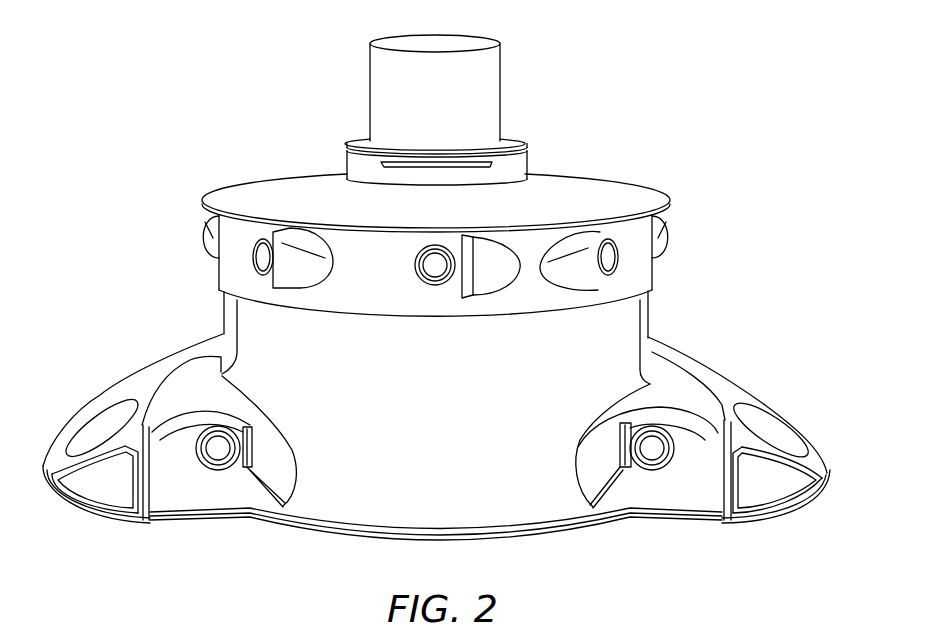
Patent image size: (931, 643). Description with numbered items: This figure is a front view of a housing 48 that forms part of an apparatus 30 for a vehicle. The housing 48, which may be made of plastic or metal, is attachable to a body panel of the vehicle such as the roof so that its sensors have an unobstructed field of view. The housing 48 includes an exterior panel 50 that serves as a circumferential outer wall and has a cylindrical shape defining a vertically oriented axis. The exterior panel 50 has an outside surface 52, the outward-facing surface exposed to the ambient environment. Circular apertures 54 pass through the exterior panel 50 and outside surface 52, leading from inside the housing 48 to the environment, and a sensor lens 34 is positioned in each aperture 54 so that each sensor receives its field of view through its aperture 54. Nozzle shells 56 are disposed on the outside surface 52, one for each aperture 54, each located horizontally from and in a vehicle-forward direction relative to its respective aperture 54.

The apparatus 30 is at (166, 116).
The sensor lens 34 is at (423, 247).
The housing 48 is at (628, 180).
The exterior panel 50 is at (427, 317).
The outside surface 52 is at (633, 263).
The apertures 54 is at (240, 283).
The nozzle shells 56 is at (200, 233).